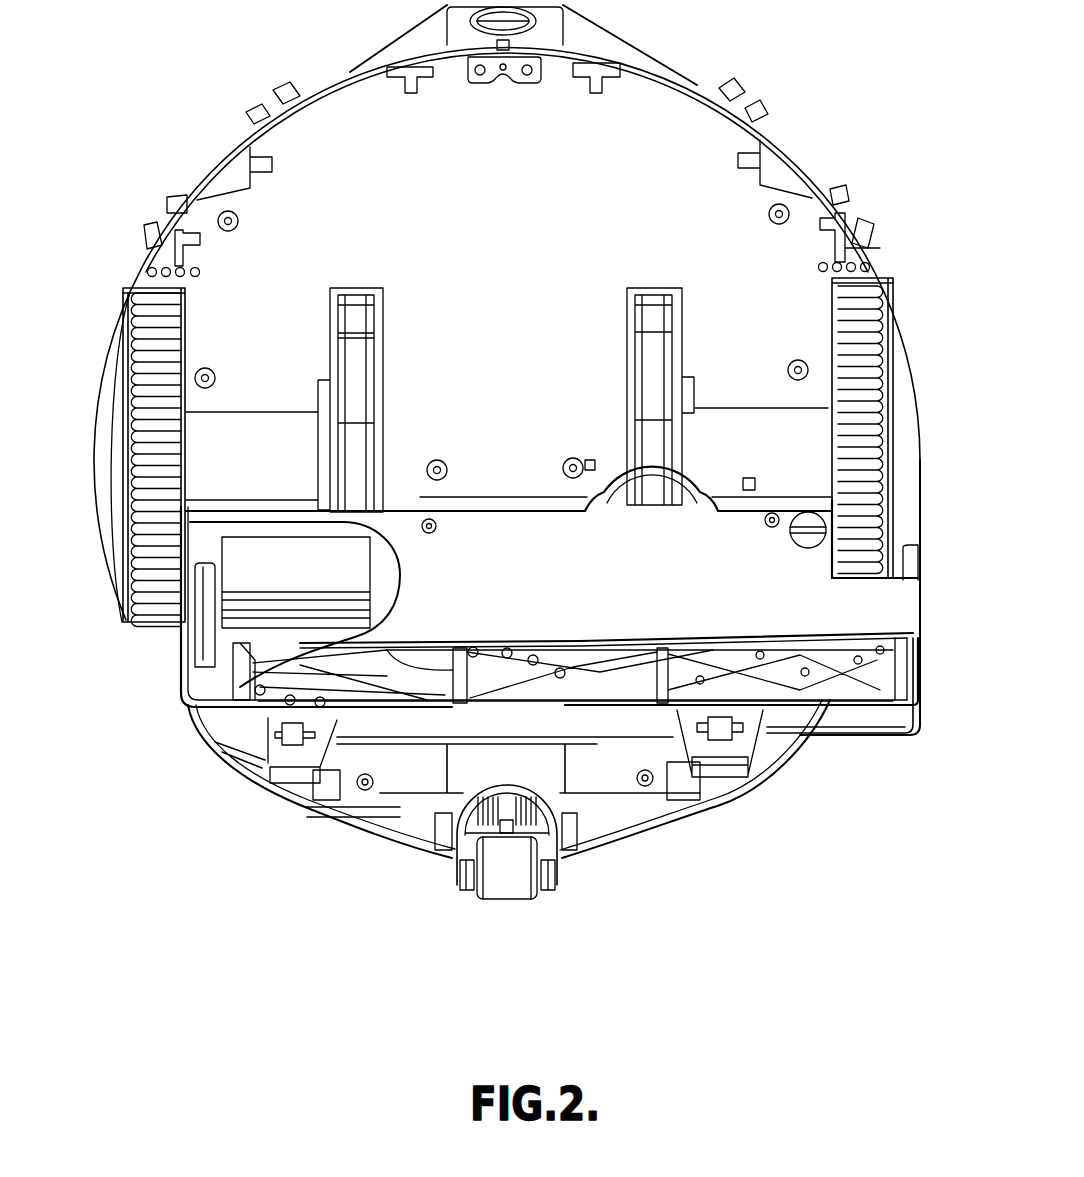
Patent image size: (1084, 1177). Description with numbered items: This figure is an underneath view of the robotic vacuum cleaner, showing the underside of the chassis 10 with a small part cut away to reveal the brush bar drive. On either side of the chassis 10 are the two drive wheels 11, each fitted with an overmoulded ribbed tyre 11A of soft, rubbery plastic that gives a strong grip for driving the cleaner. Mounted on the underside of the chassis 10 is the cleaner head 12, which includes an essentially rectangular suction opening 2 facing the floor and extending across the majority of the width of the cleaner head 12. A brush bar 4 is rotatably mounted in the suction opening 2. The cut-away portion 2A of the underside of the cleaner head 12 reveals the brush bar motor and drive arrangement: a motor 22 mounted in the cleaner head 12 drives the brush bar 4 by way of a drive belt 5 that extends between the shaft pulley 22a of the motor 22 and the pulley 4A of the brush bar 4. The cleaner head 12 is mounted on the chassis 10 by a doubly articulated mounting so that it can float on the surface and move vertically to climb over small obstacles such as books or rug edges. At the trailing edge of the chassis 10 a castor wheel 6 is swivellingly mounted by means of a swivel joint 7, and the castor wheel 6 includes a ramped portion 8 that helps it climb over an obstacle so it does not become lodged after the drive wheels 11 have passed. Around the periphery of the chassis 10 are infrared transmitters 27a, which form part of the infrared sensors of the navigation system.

The chassis 10 is at (818, 131).
The infrared transmitters 27a is at (262, 90).
The drive wheels 11 is at (903, 396).
The ribbed tyre 11A is at (862, 328).
The cleaner head 12 is at (862, 608).
The suction opening 2 is at (868, 647).
The cut-away portion 2A is at (393, 567).
The brush bar 4 is at (790, 672).
The pulley 4A is at (238, 680).
The drive belt 5 is at (203, 628).
The castor wheel 6 is at (513, 877).
The swivel joint 7 is at (473, 875).
The ramped portion 8 is at (492, 818).
The motor 22 is at (350, 577).
The shaft pulley 22a is at (220, 580).